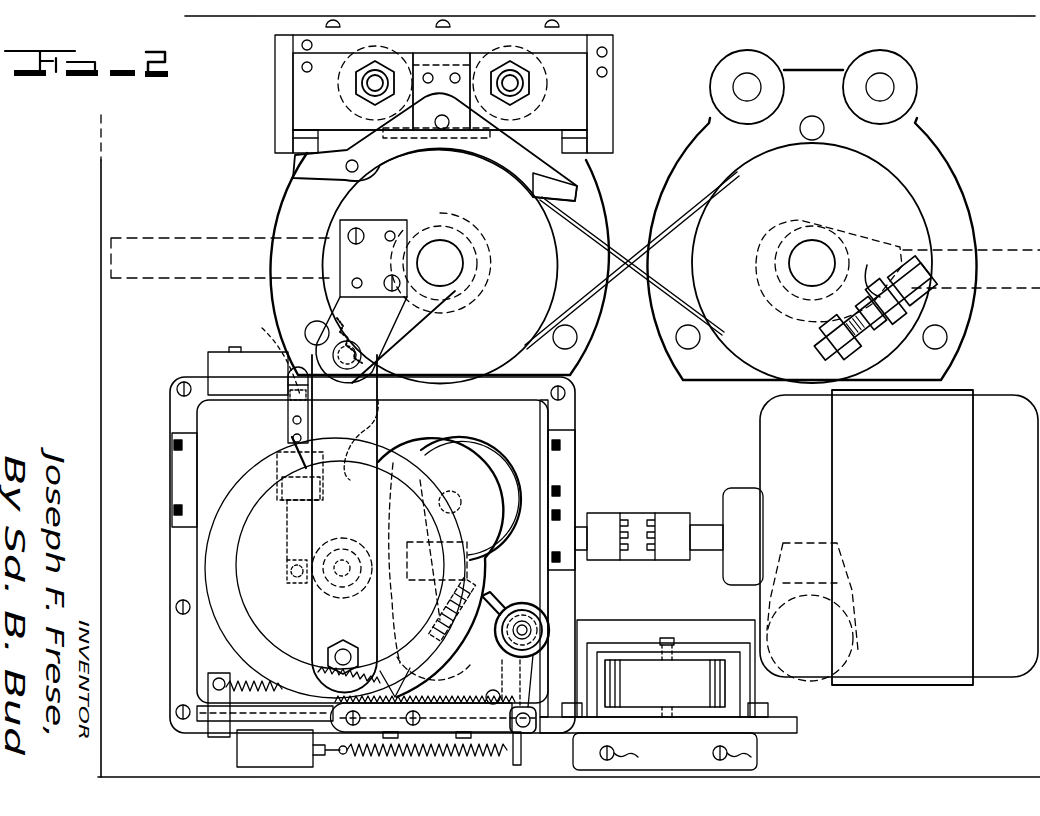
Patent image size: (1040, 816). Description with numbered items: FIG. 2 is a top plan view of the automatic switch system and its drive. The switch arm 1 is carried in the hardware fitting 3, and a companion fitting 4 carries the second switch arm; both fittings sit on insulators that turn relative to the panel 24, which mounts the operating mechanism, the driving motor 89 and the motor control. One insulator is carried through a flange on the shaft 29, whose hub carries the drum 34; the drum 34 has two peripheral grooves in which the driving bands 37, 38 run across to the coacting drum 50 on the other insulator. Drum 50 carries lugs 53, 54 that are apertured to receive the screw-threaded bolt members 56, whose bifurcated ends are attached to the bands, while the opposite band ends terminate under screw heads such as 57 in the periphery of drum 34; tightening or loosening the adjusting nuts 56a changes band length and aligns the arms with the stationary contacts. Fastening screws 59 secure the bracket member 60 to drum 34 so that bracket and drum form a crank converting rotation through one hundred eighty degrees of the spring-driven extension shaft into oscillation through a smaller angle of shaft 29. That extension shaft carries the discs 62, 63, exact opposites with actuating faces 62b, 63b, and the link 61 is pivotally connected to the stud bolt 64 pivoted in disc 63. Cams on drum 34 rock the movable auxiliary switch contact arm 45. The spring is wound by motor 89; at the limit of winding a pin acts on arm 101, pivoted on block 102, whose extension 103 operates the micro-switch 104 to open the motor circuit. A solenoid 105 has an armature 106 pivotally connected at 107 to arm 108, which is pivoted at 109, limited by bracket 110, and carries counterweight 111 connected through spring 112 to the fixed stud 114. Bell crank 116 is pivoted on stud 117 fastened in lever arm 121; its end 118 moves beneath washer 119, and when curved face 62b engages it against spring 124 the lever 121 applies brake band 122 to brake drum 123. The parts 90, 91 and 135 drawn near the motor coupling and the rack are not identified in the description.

The switch arm 1 is at (192, 244).
The hardware fitting 3 is at (458, 218).
The hardware fitting 4 is at (852, 232).
The panel 24 is at (101, 340).
The shaft 29 is at (458, 262).
The drum 34 is at (572, 196).
The driving band 37 is at (662, 300).
The driving band 38 is at (668, 224).
The movable auxiliary switch contact arm 45 is at (490, 148).
The drum 50 is at (858, 172).
The lug 53 is at (912, 312).
The lug 54 is at (873, 352).
The screw-threaded bolt member 56 is at (925, 275).
The adjusting nut 56a is at (874, 269).
The screw head 57 is at (405, 345).
The fastening screw 59 is at (360, 232).
The bracket member 60 is at (336, 318).
The link 61 is at (326, 534).
The disc 62 is at (243, 536).
The actuating face 62b is at (355, 440).
The disc 63 is at (215, 575).
The actuating face 63b is at (330, 690).
The stud bolt 64 is at (330, 640).
The driving motor 89 is at (920, 532).
The motor shaft 90 is at (703, 524).
The coupling 91 is at (640, 512).
The arm 101 is at (286, 410).
The block 102 is at (276, 462).
The extension 103 is at (261, 354).
The micro-switch 104 is at (215, 364).
The solenoid 105 is at (648, 628).
The armature member 106 is at (665, 683).
The pivotal connection 107 is at (672, 640).
The arm 108 is at (690, 736).
The pivot 109 is at (460, 752).
The bracket member 110 is at (205, 686).
The counterweight 111 is at (237, 752).
The spring 112 is at (396, 756).
The fixed stud 114 is at (521, 760).
The bell crank 116 is at (292, 748).
The pivot stud 117 is at (553, 672).
The bell crank end 118 is at (500, 678).
The washer member 119 is at (549, 608).
The lever arm 121 is at (498, 606).
The brake band 122 is at (486, 440).
The brake drum 123 is at (490, 474).
The spring 124 is at (209, 656).
The pawl pin 135 is at (486, 697).